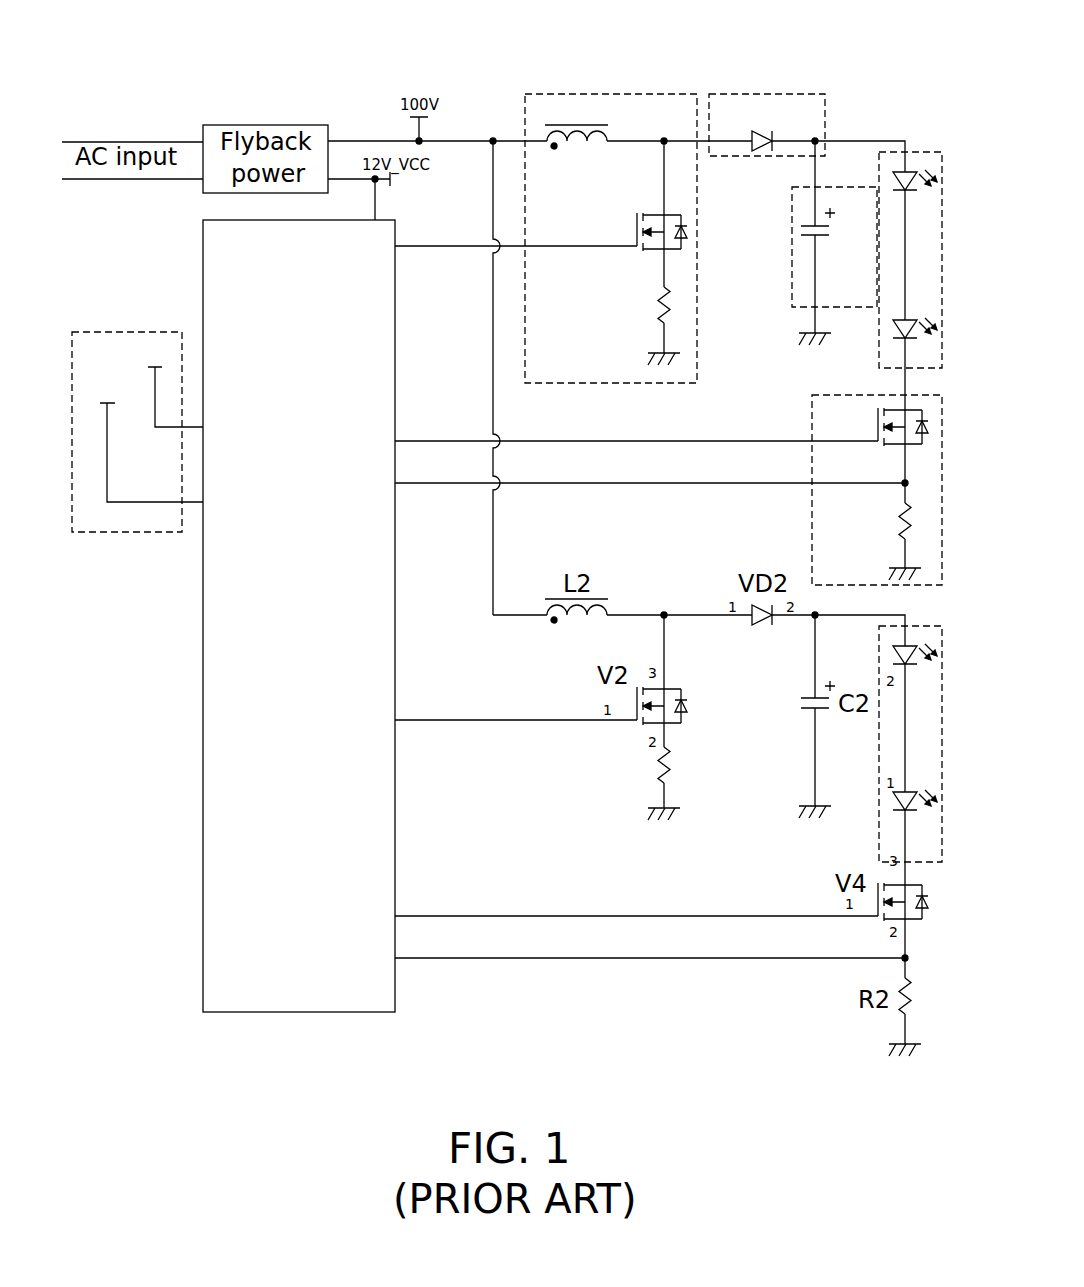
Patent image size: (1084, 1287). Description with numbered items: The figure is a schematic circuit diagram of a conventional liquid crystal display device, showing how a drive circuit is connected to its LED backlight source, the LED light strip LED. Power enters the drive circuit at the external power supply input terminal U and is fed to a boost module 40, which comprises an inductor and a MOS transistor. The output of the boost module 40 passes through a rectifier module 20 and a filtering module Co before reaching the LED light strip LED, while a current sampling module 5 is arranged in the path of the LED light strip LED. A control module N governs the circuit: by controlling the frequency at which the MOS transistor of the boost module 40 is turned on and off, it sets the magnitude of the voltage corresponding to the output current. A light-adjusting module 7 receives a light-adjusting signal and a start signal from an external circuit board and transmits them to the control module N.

The boost module 40 is at (640, 94).
The rectifier module 20 is at (728, 94).
The current sampling module 5 is at (812, 520).
The light-adjusting module 7 is at (124, 535).
The control module N is at (203, 753).
The external power supply input terminal U is at (512, 141).
The filtering module Co is at (847, 187).
The LED light strip LED is at (925, 152).